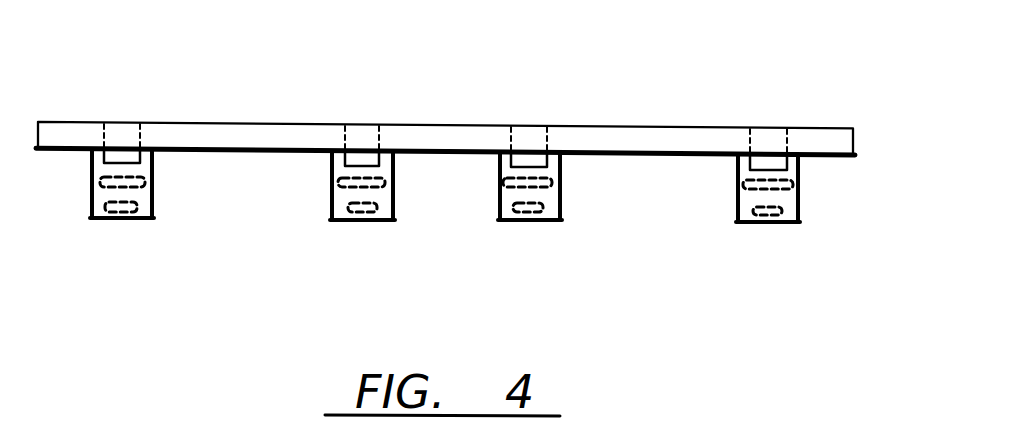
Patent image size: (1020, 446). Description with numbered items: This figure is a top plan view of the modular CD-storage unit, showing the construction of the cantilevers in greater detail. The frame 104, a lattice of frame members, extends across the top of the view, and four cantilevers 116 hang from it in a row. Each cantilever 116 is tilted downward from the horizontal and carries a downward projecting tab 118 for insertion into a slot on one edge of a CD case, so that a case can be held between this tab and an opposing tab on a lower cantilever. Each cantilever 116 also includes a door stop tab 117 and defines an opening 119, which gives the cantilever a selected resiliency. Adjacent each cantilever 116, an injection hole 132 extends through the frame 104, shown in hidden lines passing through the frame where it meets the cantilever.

The frame 104 is at (252, 136).
The injection hole 132 is at (118, 133).
The door stop tab 117 is at (90, 182).
The downward projecting tab 118 is at (126, 220).
The opening 119 is at (347, 161).
The cantilever 116 is at (340, 198).